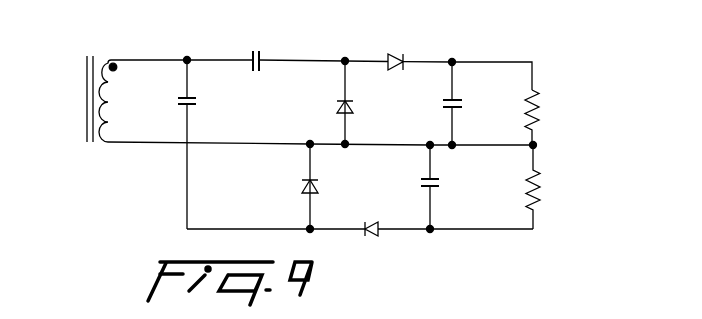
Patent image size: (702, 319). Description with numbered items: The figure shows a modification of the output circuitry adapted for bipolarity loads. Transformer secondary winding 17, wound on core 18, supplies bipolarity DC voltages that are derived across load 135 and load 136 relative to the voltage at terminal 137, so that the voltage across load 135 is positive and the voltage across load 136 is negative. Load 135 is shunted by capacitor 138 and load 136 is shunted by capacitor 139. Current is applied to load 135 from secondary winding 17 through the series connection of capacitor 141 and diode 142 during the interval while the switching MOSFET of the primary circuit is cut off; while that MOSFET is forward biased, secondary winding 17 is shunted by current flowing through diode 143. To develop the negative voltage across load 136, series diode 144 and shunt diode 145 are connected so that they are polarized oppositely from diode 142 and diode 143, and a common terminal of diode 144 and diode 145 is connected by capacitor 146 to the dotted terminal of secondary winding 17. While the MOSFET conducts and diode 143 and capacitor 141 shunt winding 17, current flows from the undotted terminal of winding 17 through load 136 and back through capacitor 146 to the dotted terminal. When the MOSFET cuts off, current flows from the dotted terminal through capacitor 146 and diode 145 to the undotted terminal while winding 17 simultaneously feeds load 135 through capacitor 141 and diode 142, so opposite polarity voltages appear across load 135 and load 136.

The transformer secondary winding 17 is at (102, 117).
The transformer core 18 is at (88, 108).
The load 135 is at (527, 99).
The load 136 is at (526, 196).
The terminal 137 is at (536, 144).
The capacitor 138 is at (446, 100).
The capacitor 139 is at (420, 181).
The capacitor 141 is at (257, 50).
The diode 142 is at (396, 51).
The diode 143 is at (337, 102).
The series diode 144 is at (378, 236).
The shunt diode 145 is at (301, 186).
The capacitor 146 is at (197, 102).